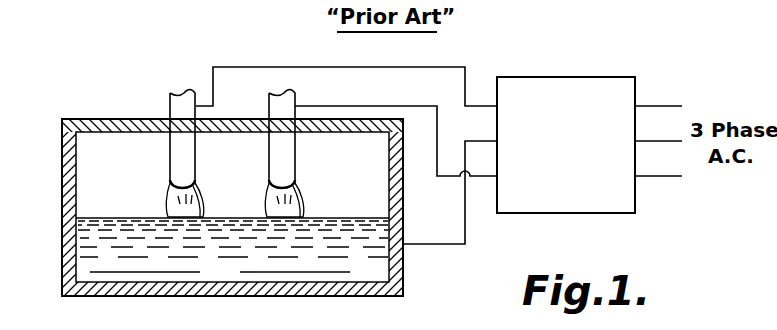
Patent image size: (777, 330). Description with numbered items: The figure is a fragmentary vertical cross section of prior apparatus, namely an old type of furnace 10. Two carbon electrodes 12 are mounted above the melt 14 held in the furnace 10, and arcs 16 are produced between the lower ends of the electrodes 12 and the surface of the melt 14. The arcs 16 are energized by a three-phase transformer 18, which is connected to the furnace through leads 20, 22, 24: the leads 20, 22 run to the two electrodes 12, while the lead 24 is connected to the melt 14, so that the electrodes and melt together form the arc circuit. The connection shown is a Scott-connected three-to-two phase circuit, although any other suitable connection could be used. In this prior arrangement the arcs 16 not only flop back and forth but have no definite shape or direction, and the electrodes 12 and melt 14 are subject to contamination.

The furnace 10 is at (62, 205).
The carbon electrodes 12 is at (188, 145).
The melt 14 is at (258, 253).
The arcs 16 is at (203, 200).
The three-phase transformer 18 is at (553, 93).
The lead 20 is at (423, 67).
The lead 22 is at (428, 106).
The lead 24 is at (436, 244).